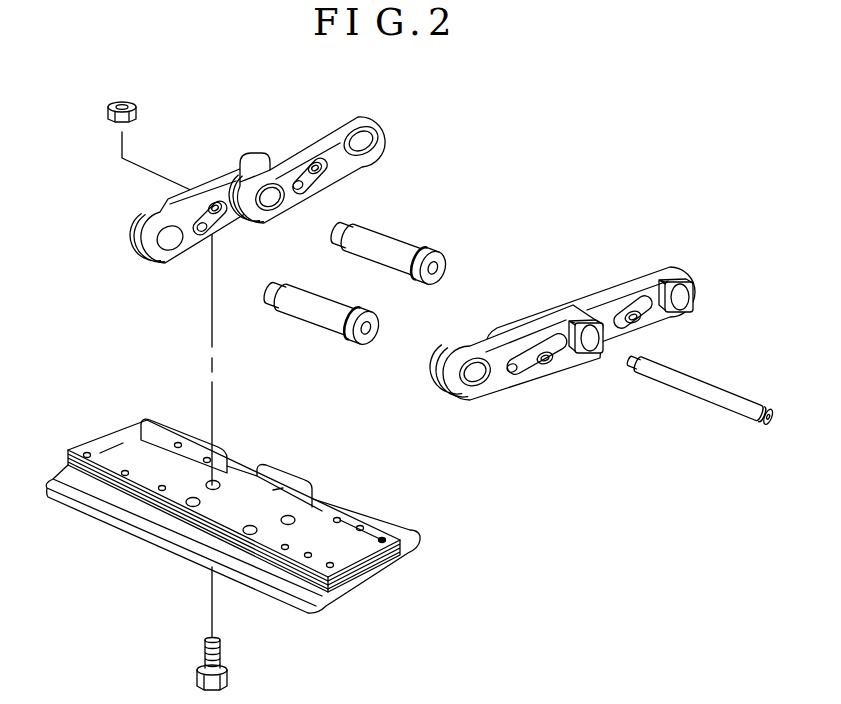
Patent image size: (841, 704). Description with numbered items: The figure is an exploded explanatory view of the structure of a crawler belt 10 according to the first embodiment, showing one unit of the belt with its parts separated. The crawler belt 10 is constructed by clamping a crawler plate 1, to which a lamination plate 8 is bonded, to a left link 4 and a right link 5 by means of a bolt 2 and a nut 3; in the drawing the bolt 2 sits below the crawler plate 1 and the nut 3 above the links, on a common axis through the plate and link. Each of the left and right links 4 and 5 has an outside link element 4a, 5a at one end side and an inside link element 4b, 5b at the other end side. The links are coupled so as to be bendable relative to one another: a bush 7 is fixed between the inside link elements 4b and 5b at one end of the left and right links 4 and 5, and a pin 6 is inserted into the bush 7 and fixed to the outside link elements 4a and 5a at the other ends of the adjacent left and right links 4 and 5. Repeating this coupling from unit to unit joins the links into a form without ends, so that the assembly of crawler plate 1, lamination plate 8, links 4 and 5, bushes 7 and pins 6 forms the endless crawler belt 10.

The crawler plate 1 is at (353, 590).
The bolt 2 is at (228, 678).
The nut 3 is at (106, 111).
The left link 4 is at (497, 332).
The outside link element 4a is at (596, 364).
The inside link element 4b is at (550, 320).
The right link 5 is at (194, 186).
The outside link element 5a is at (243, 160).
The inside link element 5b is at (147, 258).
The pin 6 is at (712, 382).
The bush 7 is at (407, 232).
The lamination plate 8 is at (372, 566).
The crawler belt 10 is at (540, 151).